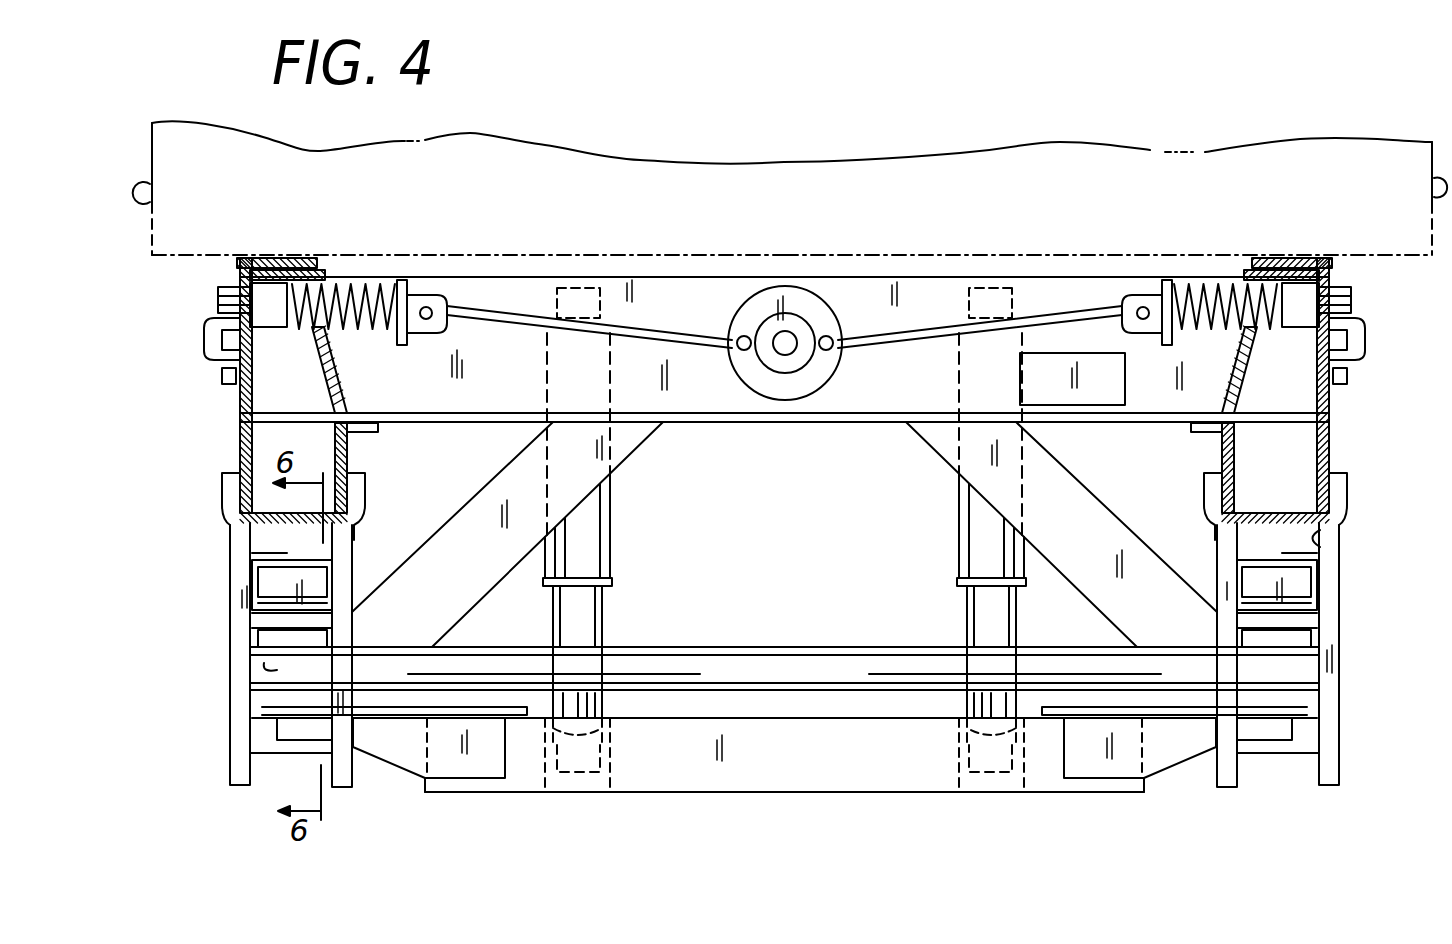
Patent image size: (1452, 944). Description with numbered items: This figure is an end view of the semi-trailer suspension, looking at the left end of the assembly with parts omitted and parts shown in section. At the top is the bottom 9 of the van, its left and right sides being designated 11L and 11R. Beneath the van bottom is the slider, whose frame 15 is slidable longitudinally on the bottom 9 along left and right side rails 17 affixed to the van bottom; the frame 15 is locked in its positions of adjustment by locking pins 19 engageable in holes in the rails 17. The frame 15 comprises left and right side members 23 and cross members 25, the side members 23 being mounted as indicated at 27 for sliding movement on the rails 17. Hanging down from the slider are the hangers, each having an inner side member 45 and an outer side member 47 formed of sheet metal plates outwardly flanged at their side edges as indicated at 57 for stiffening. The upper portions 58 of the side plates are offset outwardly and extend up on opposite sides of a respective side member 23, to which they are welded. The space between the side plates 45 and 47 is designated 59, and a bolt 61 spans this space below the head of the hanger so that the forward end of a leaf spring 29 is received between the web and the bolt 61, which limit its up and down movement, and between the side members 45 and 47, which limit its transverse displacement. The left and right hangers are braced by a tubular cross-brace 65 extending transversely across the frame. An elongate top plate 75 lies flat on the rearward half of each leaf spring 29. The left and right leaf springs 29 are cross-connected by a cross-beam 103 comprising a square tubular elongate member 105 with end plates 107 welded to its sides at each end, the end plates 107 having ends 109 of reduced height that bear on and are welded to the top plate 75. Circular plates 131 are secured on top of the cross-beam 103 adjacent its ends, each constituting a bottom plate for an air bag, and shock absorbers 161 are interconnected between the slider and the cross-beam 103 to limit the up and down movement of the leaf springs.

The bottom of the van 9 is at (815, 259).
The left side of the van 11L is at (150, 198).
The right side of the van 11R is at (1432, 197).
The frame 15 is at (241, 405).
The side rails 17 is at (237, 264).
The locking pins 19 is at (218, 300).
The side members 23 is at (240, 431).
The cross members 25 is at (794, 424).
The mounting of side members on rails 27 is at (207, 338).
The leaf springs 29 is at (252, 565).
The inner side member 45 is at (345, 789).
The outer side member 47 is at (240, 786).
The outward flanges 57 is at (232, 578).
The upper portions of the side plates 58 is at (222, 484).
The space between the side plates 59 is at (270, 668).
The bolt 61 is at (268, 621).
The tubular cross-brace 65 is at (745, 673).
The elongate plates 75 is at (262, 751).
The cross-beam 103 is at (692, 814).
The elongate member 105 is at (833, 780).
The end plates 107 is at (495, 781).
The ends of reduced height 109 is at (285, 727).
The circular plates 131 is at (445, 713).
The shock absorbers 161 is at (612, 541).